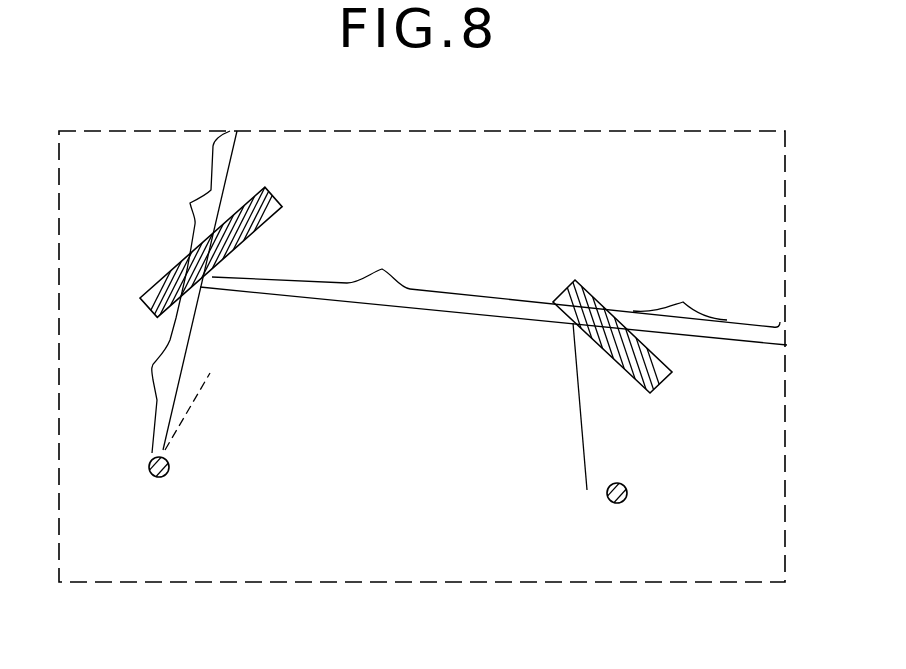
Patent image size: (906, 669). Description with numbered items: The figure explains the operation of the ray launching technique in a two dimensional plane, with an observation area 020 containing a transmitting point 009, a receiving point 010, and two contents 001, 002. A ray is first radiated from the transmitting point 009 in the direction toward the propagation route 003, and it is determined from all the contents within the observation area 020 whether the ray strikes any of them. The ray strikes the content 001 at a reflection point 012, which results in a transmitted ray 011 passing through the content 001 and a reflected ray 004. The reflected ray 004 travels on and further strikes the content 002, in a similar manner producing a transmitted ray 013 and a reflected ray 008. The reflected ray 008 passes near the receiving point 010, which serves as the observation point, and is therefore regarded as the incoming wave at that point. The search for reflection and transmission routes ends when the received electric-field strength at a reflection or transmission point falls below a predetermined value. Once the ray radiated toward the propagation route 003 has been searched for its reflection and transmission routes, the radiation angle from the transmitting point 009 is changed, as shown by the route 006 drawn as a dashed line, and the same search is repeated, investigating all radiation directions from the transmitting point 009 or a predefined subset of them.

The content 001 is at (281, 204).
The content 002 is at (578, 280).
The propagation route 003 is at (152, 370).
The reflected ray 004 is at (493, 292).
The route 006 is at (187, 420).
The reflected ray 008 is at (580, 403).
The transmitting point 009 is at (156, 477).
The receiving point 010 is at (609, 502).
The transmitted ray 011 is at (190, 203).
The reflection point 012 is at (200, 287).
The transmitted ray 013 is at (680, 296).
The observation area 020 is at (667, 131).